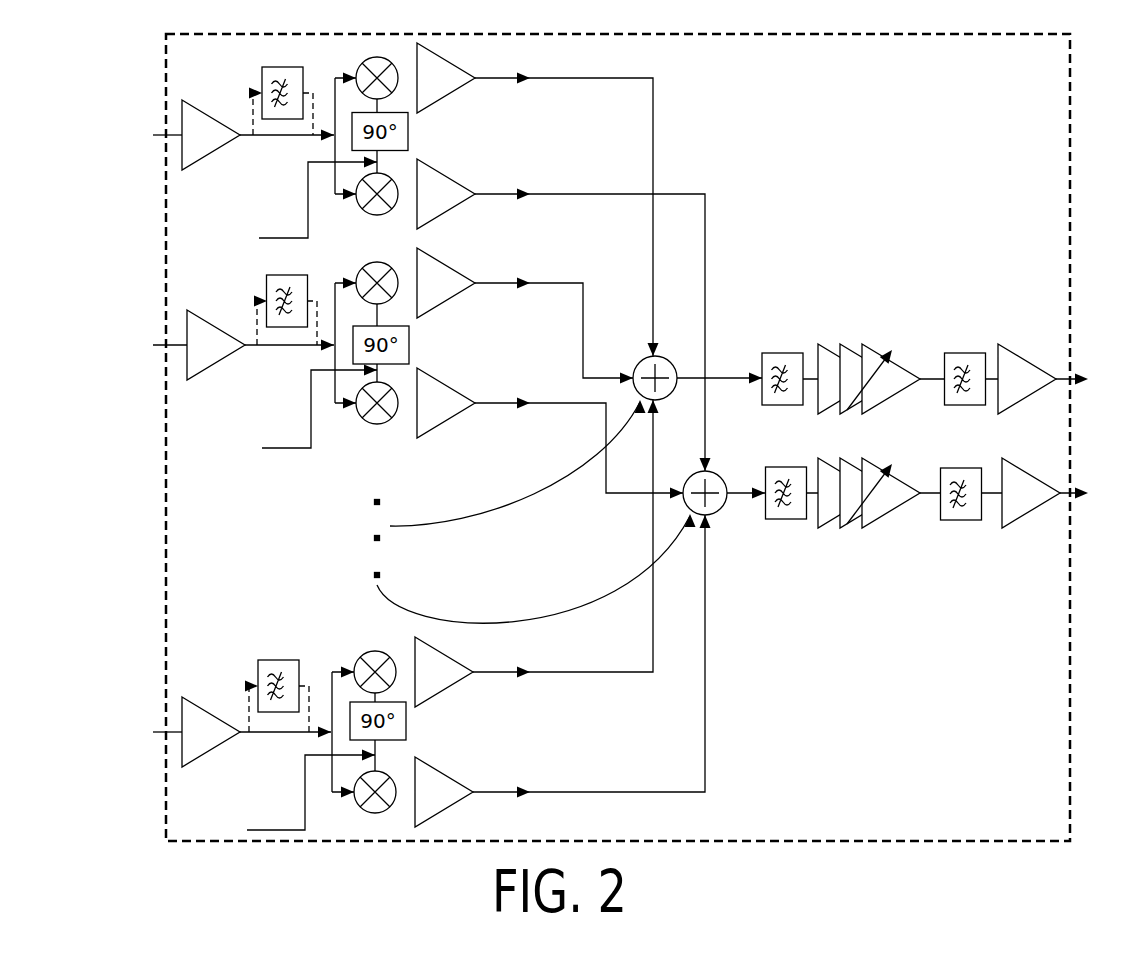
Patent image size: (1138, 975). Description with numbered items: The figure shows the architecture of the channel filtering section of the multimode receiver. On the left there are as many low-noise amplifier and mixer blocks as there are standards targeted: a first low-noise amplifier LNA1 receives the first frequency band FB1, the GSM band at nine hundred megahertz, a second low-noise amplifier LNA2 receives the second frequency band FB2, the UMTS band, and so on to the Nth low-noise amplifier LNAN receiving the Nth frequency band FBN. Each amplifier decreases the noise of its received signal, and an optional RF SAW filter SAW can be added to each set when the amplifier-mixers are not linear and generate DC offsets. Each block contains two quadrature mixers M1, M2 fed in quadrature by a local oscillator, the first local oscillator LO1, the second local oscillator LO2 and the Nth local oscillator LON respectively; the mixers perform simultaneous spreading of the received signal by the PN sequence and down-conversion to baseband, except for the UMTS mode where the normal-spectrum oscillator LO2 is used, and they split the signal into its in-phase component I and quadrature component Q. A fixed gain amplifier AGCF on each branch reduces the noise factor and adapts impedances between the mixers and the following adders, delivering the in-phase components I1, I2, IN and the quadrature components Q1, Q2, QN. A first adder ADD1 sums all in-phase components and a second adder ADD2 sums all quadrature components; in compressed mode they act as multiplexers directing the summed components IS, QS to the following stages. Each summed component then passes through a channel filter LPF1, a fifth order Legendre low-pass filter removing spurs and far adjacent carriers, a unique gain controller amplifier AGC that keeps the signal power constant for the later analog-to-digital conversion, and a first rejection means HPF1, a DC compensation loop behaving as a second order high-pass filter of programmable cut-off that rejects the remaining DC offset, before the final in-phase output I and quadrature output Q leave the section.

The first frequency band FB1 is at (126, 134).
The second frequency band FB2 is at (128, 344).
The Nth frequency band FBN is at (135, 731).
The first low-noise amplifier LNA1 is at (211, 158).
The second low-noise amplifier LNA2 is at (216, 367).
The Nth low-noise amplifier LNAN is at (220, 745).
The RF SAW filter SAW is at (258, 660).
The first local oscillator LO1 is at (318, 198).
The second local oscillator LO2 is at (319, 407).
The Nth local oscillator LON is at (311, 791).
The first quadrature mixer M1 is at (377, 262).
The second quadrature mixer M2 is at (380, 423).
The fixed gain amplifier AGCF is at (445, 185).
The first in-phase component I1 is at (567, 203).
The first quadrature component Q1 is at (593, 320).
The second in-phase component I2 is at (554, 320).
The second quadrature component Q2 is at (579, 439).
The Nth in-phase component IN is at (566, 539).
The Nth quadrature component QN is at (592, 656).
The first adder ADD1 is at (670, 360).
The second adder ADD2 is at (720, 477).
The summed in-phase component IS is at (719, 368).
The summed quadrature component QS is at (744, 513).
The channel filter LPF1 is at (762, 353).
The gain controller amplifier AGC is at (834, 348).
The first rejection means HPF1 is at (963, 352).
The in-phase component I is at (1044, 379).
The quadrature component Q is at (1049, 493).